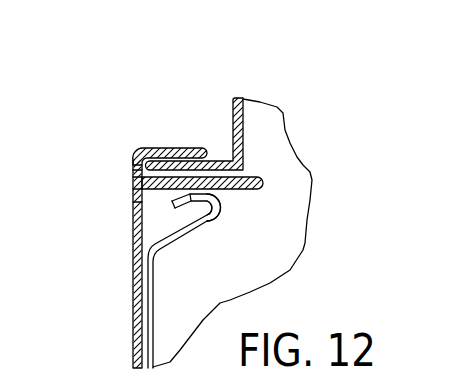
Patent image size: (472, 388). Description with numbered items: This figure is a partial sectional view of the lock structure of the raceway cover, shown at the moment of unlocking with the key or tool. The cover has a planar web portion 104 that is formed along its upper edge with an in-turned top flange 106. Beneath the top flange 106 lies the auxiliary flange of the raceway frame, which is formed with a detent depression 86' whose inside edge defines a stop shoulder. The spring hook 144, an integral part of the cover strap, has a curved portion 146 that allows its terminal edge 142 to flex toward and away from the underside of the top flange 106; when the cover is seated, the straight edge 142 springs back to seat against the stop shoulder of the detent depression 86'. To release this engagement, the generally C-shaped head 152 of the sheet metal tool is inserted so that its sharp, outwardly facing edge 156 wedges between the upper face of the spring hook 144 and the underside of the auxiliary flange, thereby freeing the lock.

The detent depression 86' is at (160, 132).
The planar web portion 104 is at (132, 295).
The in-turned flange 106 is at (173, 148).
The terminal edge 142 is at (138, 221).
The spring hook 144 is at (182, 236).
The curved portion 146 is at (222, 208).
The C-shaped head 152 is at (263, 181).
The outwardly facing edge 156 is at (133, 178).